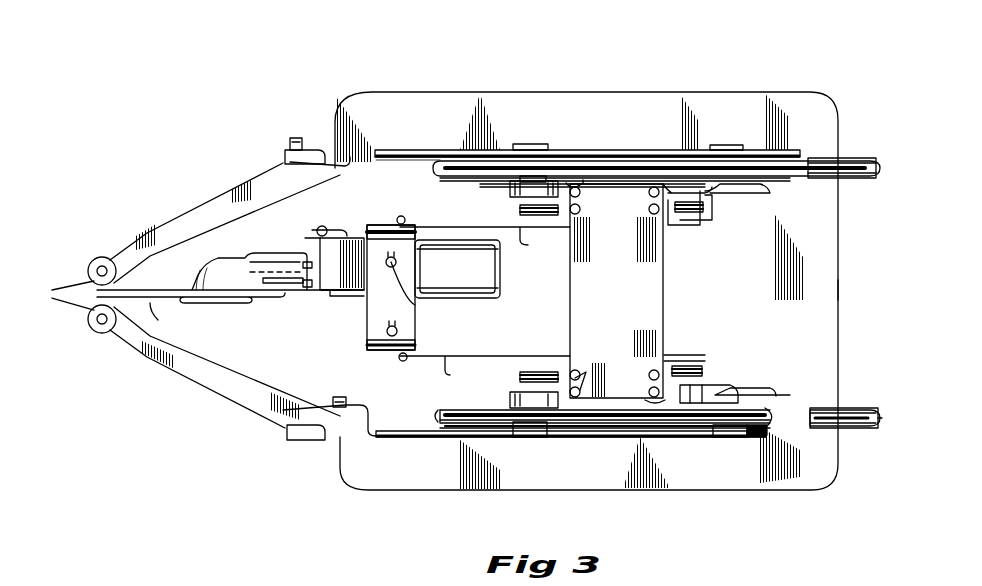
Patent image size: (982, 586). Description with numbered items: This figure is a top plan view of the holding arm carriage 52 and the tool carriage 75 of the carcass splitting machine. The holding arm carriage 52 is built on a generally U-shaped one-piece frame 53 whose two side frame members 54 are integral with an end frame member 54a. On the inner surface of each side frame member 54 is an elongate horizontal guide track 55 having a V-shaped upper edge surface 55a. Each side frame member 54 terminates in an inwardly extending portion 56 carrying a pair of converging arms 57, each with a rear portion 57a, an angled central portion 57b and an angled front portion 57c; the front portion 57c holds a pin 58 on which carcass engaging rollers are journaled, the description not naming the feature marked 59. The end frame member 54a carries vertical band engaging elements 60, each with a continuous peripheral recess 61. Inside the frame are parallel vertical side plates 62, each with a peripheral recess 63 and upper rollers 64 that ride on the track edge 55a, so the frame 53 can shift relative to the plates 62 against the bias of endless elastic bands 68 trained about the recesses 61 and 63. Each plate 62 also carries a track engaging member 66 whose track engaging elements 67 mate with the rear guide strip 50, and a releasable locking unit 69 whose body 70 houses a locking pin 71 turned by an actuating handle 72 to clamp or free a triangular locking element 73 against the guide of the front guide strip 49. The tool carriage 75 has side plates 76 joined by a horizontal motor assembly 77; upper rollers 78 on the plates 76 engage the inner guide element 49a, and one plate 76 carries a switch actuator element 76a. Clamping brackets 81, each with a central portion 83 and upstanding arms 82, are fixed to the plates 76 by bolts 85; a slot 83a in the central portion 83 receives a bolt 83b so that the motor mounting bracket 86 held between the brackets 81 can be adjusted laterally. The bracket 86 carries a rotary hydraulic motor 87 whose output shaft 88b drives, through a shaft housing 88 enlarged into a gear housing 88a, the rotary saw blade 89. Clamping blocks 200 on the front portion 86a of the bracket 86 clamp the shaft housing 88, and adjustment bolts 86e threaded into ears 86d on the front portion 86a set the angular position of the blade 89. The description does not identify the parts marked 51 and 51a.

The front guide strip 49 is at (654, 210).
The inner guide element 49a is at (670, 186).
The rear guide strip 50 is at (418, 222).
The slide plate 51 is at (616, 291).
The slide plate opening 51a is at (601, 366).
The holding arm carriage 52 is at (826, 84).
The U-shaped one-piece frame 53 is at (427, 86).
The side frame member 54 is at (560, 92).
The end frame member 54a is at (840, 286).
The guide track 55 is at (404, 149).
The V-shaped upper edge surface 55a is at (432, 150).
The inwardly extending portion 56 is at (340, 132).
The arm 57 is at (228, 181).
The rear portion 57a is at (284, 157).
The angled central portion 57b is at (192, 205).
The angled front portion 57c is at (125, 247).
The pin 58 is at (88, 270).
The link 59 is at (55, 296).
The band engaging element 60 is at (872, 155).
The continuous peripheral recess 61 is at (880, 422).
The vertical side plate 62 is at (605, 170).
The continuous peripheral recess 63 is at (436, 415).
The upper roller 64 is at (533, 140).
The track engaging member 66 is at (508, 190).
The track engaging element 67 is at (592, 196).
The endless elastic band 68 is at (879, 169).
The releasable locking unit 69 is at (770, 190).
The locking body 70 is at (723, 385).
The locking pin 71 is at (715, 378).
The actuating handle 72 is at (770, 190).
The locking element 73 is at (648, 398).
The tool carriage 75 is at (276, 313).
The side plate 76 is at (526, 230).
The switch actuator element 76a is at (712, 208).
The motor assembly 77 is at (330, 318).
The upper roller 78 is at (518, 212).
The clamping bracket 81 is at (358, 341).
The arm 82 is at (390, 219).
The central portion 83 is at (362, 327).
The elongated slot 83a is at (397, 265).
The bolt 83b is at (398, 332).
The bolt 85 is at (413, 210).
The motor mounting bracket 86 is at (352, 231).
The front portion 86a is at (348, 292).
The ear 86d is at (318, 236).
The adjustment bolt 86e is at (321, 224).
The rotary hydraulic motor 87 is at (457, 269).
The shaft housing 88 is at (248, 257).
The gear housing 88a is at (180, 289).
The output shaft 88b is at (283, 304).
The rotary saw blade 89 is at (169, 322).
The clamping block 200 is at (305, 243).